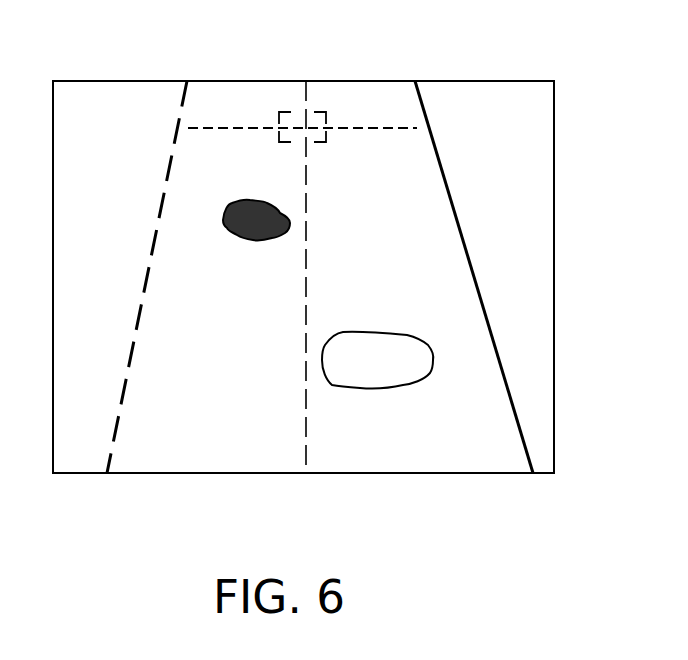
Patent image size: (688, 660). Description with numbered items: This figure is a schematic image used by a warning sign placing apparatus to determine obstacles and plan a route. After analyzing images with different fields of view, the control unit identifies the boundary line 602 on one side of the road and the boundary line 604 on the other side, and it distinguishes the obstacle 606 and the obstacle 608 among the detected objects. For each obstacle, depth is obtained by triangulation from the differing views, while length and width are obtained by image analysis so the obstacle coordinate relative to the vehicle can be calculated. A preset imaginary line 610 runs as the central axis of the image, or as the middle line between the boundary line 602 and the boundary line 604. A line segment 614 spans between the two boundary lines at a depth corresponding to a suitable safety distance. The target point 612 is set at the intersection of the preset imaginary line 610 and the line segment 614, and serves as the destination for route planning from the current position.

The boundary line 602 is at (106, 474).
The boundary line 604 is at (533, 473).
The obstacle 606 is at (251, 200).
The obstacle 608 is at (395, 350).
The preset imaginary line 610 is at (305, 475).
The target point 612 is at (320, 118).
The line segment 614 is at (393, 125).